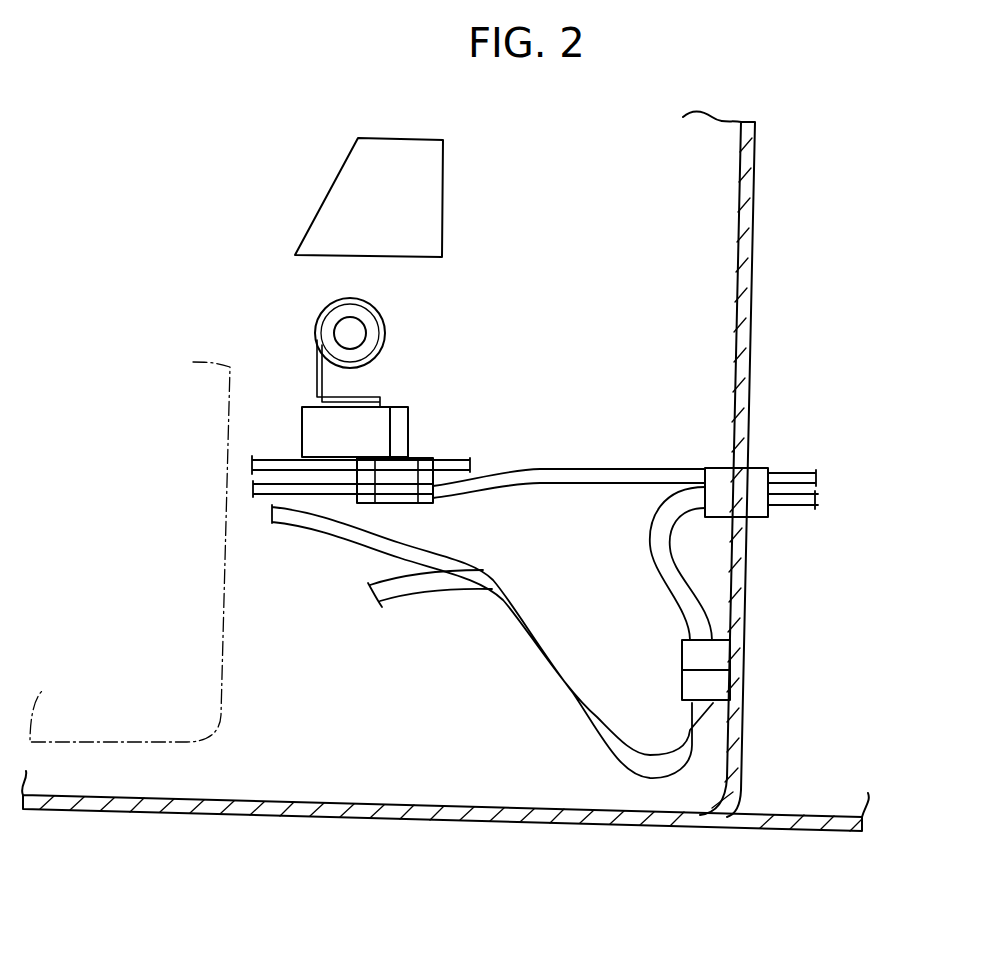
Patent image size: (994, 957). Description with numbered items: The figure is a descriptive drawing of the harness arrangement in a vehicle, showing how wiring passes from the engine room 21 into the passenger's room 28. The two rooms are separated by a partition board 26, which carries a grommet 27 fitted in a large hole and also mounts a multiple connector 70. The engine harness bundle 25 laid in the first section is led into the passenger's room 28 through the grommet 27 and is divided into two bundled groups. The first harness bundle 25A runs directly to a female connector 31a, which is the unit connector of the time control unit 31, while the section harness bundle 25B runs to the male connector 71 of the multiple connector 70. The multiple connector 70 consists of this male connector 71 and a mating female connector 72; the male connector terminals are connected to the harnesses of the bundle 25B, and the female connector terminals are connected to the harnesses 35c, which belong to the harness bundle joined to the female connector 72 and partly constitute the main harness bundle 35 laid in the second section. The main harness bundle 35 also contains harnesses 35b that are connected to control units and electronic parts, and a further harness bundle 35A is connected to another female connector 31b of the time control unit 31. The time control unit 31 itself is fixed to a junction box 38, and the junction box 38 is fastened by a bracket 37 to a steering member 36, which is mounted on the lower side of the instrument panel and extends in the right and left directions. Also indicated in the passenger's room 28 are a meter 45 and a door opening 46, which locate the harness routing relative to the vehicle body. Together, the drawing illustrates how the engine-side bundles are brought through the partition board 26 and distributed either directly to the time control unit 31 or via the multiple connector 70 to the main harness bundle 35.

The engine room 21 is at (808, 344).
The engine harness bundle 25 is at (783, 515).
The first harness bundle 25A is at (560, 468).
The section harness bundle 25B is at (646, 548).
The partition board 26 is at (755, 200).
The grommet 27 is at (715, 468).
The passenger's room 28 is at (585, 256).
The time control unit 31 is at (403, 490).
The female connector 31a is at (437, 452).
The female connector 31b is at (370, 452).
The main harness bundle 35 is at (278, 524).
The harness bundle 35A is at (263, 457).
The harnesses 35b is at (425, 540).
The harnesses 35c is at (577, 730).
The steering member 36 is at (375, 328).
The bracket 37 is at (316, 366).
The junction box 38 is at (302, 423).
The meter 45 is at (443, 177).
The door opening 46 is at (221, 722).
The multiple connector 70 is at (682, 684).
The male connector 71 is at (690, 656).
The female connector 72 is at (715, 684).